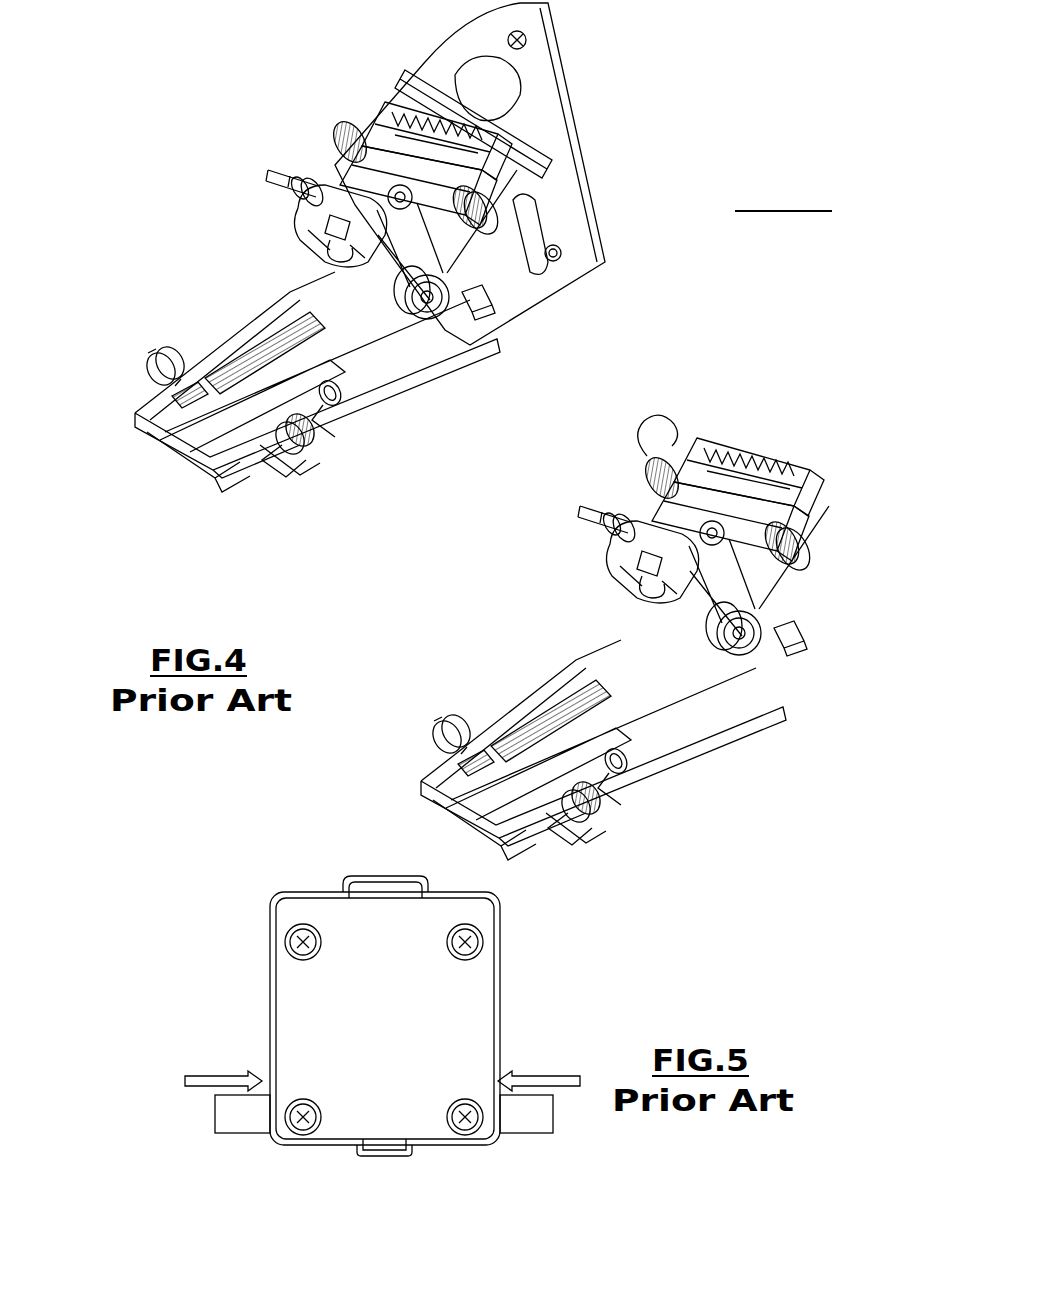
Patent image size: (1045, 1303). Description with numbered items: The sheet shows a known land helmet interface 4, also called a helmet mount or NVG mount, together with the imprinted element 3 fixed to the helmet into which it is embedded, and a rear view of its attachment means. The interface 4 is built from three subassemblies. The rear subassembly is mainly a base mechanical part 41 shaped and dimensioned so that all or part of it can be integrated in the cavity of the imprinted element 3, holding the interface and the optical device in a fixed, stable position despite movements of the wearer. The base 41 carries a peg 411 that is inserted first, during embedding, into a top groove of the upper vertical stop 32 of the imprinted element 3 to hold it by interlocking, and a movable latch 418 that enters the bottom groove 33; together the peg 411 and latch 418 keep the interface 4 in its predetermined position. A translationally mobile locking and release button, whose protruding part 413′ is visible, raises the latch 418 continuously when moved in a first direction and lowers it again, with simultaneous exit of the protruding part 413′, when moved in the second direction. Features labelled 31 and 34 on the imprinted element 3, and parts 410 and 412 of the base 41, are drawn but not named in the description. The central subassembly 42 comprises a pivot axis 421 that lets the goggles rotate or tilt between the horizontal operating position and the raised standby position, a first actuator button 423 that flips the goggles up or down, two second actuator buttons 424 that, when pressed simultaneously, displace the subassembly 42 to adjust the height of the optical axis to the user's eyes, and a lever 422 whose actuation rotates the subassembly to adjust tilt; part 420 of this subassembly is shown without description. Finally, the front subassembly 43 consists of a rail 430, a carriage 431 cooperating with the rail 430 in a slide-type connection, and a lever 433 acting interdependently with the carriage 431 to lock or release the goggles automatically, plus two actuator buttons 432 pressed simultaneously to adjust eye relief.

In FIG. 3, the imprinted element 3 is at (586, 108).
In FIG. 3, the base plate 31 is at (548, 282).
In FIG. 3, the upper vertical stop 32 is at (427, 97).
In FIG. 3, the bottom groove 33 is at (517, 38).
In FIG. 3, the mounting hole 34 is at (553, 253).
In FIG. 3, the land helmet interface 4 is at (162, 252).
In FIG. 4, the land helmet interface 4 is at (416, 669).
In FIG. 4, the base mechanical part 41 is at (711, 576).
In FIG. 5, the base mechanical part 41 is at (226, 970).
In FIG. 3, the lower housing portion 410 is at (497, 168).
In FIG. 4, the lower housing portion 410 is at (791, 521).
In FIG. 3, the peg 411 is at (376, 101).
In FIG. 4, the peg 411 is at (769, 443).
In FIG. 5, the peg 411 is at (355, 885).
In FIG. 3, the toothed portion 412 is at (417, 127).
In FIG. 4, the toothed portion 412 is at (703, 438).
In FIG. 3, the protruding part of locking/release button 413′ is at (478, 302).
In FIG. 4, the protruding part of locking/release button 413′ is at (844, 656).
In FIG. 5, the protruding part of locking/release button 413′ is at (522, 1122).
In FIG. 5, the latch 418 is at (370, 1147).
In FIG. 4, the second central subassembly 42 is at (711, 594).
In FIG. 4, the link arm 420 is at (794, 636).
In FIG. 3, the pivot axis 421 is at (325, 225).
In FIG. 4, the pivot axis 421 is at (597, 565).
In FIG. 3, the lever 422 is at (303, 175).
In FIG. 4, the lever 422 is at (566, 542).
In FIG. 3, the first actuator button 423 is at (432, 302).
In FIG. 4, the first actuator button 423 is at (794, 692).
In FIG. 3, the second actuator buttons 424 is at (353, 147).
In FIG. 4, the second actuator buttons 424 is at (741, 491).
In FIG. 3, the third front subassembly 43 is at (292, 258).
In FIG. 4, the third front subassembly 43 is at (554, 749).
In FIG. 3, the rail 430 is at (205, 428).
In FIG. 4, the rail 430 is at (491, 830).
In FIG. 3, the carriage 431 is at (340, 402).
In FIG. 4, the carriage 431 is at (705, 777).
In FIG. 3, the actuator buttons 432 is at (172, 362).
In FIG. 4, the actuator buttons 432 is at (514, 805).
In FIG. 3, the lever 433 is at (250, 360).
In FIG. 4, the lever 433 is at (625, 775).